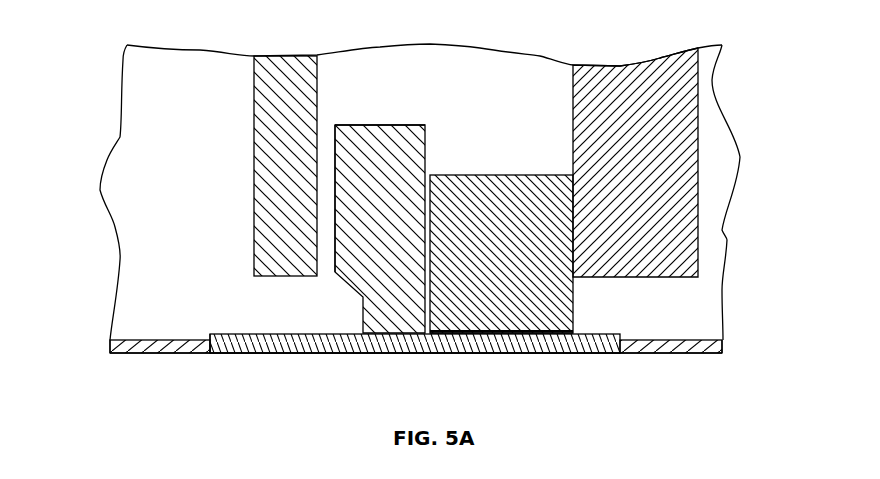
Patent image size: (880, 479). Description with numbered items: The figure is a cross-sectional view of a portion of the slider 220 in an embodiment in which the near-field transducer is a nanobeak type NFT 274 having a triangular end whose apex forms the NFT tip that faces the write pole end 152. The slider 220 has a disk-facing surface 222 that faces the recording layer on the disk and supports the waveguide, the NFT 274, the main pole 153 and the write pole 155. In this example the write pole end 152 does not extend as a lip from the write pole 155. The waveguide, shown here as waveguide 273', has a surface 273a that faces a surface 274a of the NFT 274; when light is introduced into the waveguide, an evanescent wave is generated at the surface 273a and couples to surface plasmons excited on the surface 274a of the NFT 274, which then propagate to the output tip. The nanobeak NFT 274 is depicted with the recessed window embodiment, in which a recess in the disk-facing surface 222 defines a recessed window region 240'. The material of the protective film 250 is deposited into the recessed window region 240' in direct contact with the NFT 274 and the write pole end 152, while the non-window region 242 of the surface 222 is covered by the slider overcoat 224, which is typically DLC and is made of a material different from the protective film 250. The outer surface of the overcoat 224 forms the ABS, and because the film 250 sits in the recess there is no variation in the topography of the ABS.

The slider 220 is at (133, 105).
The disk-facing surface 222 is at (108, 340).
The slider overcoat 224 is at (168, 350).
The non-window region 242 is at (150, 340).
The recessed window region 240' is at (207, 323).
The protective film 250 is at (275, 340).
The NFT 274 is at (363, 322).
The surface of NFT 274a is at (335, 249).
The return pole 273' is at (246, 166).
The surface of waveguide 273a is at (318, 152).
The write pole 155 is at (452, 176).
The main pole 153 is at (585, 150).
The write pole end 152 is at (573, 326).
The air bearing surface ABS is at (422, 340).